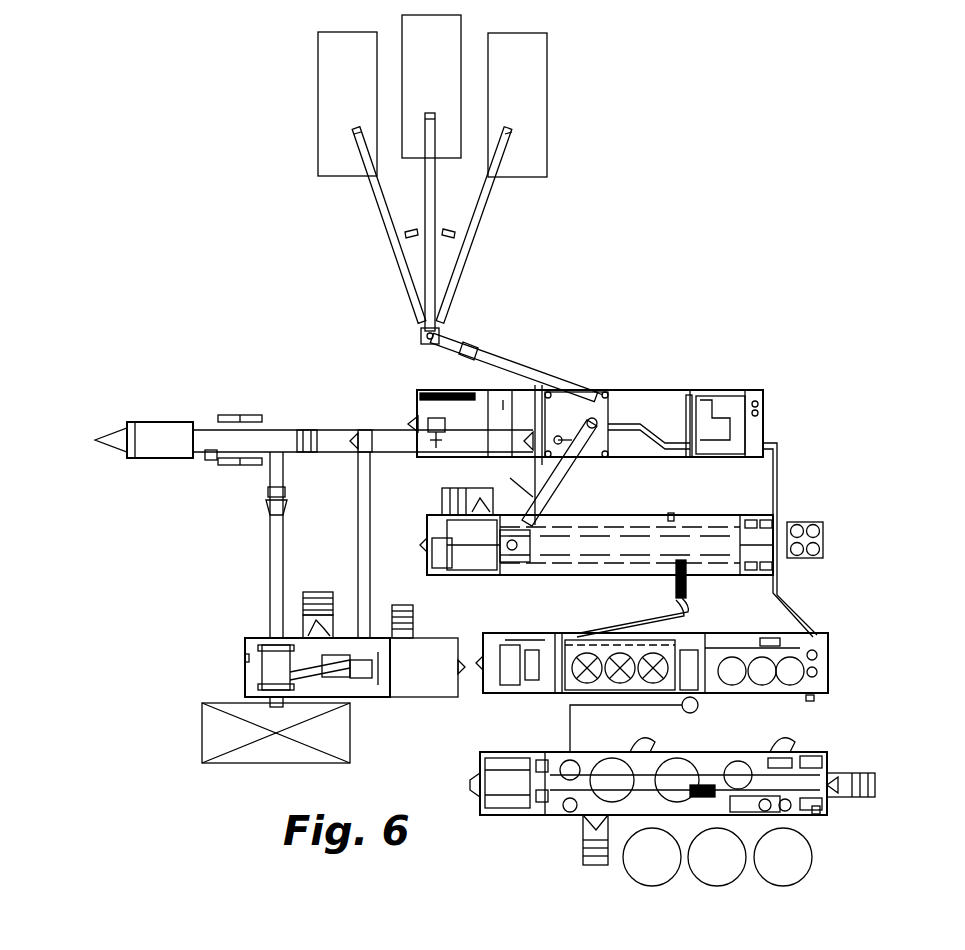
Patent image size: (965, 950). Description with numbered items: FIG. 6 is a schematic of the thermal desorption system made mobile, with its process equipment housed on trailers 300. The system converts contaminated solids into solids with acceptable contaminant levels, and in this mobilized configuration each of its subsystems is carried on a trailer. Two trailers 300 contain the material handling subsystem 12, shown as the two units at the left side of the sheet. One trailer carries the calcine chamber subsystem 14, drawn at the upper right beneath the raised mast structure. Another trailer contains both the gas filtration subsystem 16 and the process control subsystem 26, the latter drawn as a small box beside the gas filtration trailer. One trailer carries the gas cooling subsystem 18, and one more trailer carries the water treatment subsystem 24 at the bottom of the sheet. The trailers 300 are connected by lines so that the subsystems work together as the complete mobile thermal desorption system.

The material handling subsystem 12 is at (125, 452).
The calcine chamber subsystem 14 is at (763, 390).
The gas filtration subsystem 16 is at (777, 523).
The gas cooling subsystem 18 is at (828, 635).
The water treatment subsystem 24 is at (827, 755).
The process control subsystem 26 is at (777, 527).
The trailers 300 is at (688, 395).